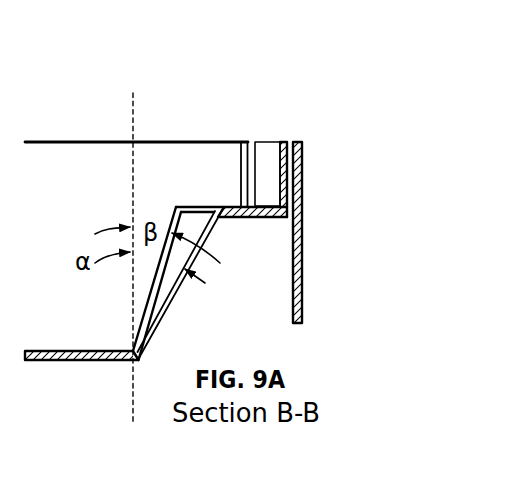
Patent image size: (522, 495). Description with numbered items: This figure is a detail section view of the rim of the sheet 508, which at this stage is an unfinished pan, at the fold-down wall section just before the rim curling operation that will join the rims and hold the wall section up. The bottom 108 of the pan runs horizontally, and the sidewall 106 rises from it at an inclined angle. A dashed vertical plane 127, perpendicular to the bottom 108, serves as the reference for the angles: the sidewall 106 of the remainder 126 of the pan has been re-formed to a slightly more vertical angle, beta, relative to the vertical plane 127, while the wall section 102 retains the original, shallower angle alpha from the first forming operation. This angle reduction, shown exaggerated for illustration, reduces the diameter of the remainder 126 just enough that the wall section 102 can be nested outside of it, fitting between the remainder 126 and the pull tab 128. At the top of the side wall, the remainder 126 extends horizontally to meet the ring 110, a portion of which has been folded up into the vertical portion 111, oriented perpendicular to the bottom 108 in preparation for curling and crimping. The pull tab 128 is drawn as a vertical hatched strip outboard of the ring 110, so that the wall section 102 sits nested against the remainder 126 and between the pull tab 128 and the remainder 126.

The sheet 508 is at (77, 84).
The remainder of the pan 126 is at (193, 139).
The vertical plane 127 is at (134, 107).
The vertical portion of the ring 111 is at (245, 140).
The ring 110 is at (199, 205).
The pull tab 128 is at (303, 258).
The bottom 108 is at (57, 350).
The sidewall 106 is at (143, 294).
The wall section 102 is at (179, 298).